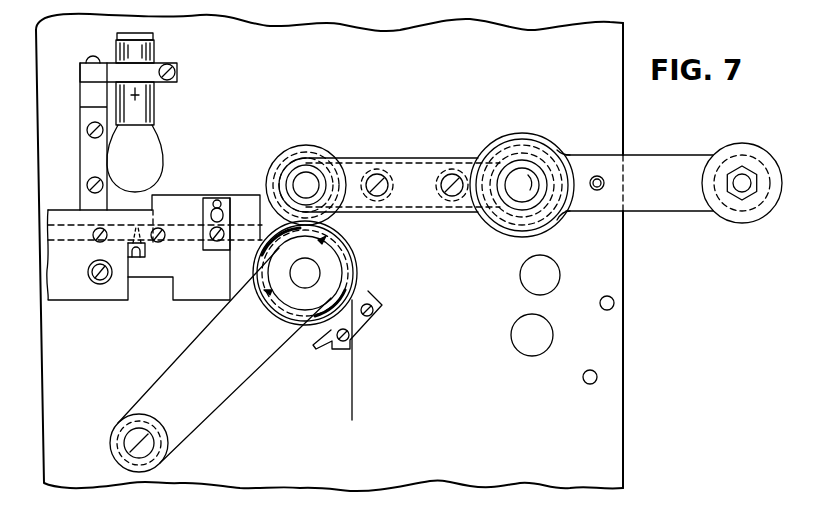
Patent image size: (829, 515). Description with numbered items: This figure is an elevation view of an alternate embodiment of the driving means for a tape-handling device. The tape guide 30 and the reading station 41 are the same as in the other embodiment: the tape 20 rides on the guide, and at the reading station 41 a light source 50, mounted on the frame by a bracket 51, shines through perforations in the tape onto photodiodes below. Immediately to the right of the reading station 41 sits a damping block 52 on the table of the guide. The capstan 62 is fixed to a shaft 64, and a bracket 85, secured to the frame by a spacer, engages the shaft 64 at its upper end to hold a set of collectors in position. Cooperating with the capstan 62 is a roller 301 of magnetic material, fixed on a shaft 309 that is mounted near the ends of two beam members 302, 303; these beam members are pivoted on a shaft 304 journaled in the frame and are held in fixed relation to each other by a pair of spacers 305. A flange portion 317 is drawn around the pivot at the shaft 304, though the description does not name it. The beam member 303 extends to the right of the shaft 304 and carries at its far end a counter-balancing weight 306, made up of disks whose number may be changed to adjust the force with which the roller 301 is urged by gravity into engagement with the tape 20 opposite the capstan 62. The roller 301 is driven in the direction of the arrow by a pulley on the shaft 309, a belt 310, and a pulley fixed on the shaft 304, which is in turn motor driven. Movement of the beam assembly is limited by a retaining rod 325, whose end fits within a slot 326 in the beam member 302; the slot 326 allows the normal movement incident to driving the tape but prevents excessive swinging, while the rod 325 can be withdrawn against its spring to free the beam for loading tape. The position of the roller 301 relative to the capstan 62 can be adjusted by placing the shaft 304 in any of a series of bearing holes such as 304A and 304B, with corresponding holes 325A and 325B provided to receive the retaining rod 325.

The tape 20 is at (353, 372).
The tape guide 30 is at (69, 210).
The reading station 41 is at (150, 261).
The light source 50 is at (155, 148).
The bracket 51 is at (157, 68).
The damping block 52 is at (170, 195).
The capstan 62 is at (342, 246).
The shaft 64 is at (298, 281).
The bracket 85 is at (226, 388).
The roller 301 is at (314, 147).
The beam member 302 is at (418, 206).
The beam member 303 is at (676, 155).
The shaft 304 is at (514, 172).
The bearing hole 304A is at (558, 270).
The bearing hole 304B is at (517, 320).
The spacers 305 is at (445, 170).
The counter-balancing weight 306 is at (735, 144).
The shaft 309 is at (302, 182).
The belt 310 is at (339, 160).
The flange 317 is at (505, 236).
The retaining rod 325 is at (597, 191).
The hole 325A is at (614, 303).
The hole 325B is at (586, 383).
The slot 326 is at (597, 178).